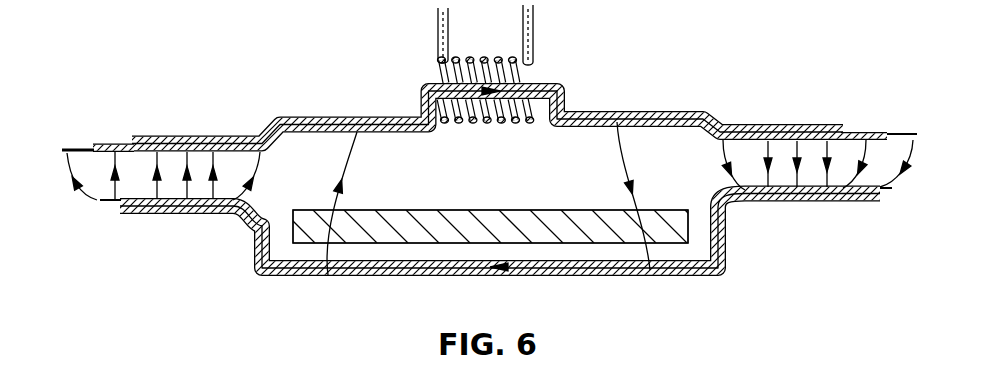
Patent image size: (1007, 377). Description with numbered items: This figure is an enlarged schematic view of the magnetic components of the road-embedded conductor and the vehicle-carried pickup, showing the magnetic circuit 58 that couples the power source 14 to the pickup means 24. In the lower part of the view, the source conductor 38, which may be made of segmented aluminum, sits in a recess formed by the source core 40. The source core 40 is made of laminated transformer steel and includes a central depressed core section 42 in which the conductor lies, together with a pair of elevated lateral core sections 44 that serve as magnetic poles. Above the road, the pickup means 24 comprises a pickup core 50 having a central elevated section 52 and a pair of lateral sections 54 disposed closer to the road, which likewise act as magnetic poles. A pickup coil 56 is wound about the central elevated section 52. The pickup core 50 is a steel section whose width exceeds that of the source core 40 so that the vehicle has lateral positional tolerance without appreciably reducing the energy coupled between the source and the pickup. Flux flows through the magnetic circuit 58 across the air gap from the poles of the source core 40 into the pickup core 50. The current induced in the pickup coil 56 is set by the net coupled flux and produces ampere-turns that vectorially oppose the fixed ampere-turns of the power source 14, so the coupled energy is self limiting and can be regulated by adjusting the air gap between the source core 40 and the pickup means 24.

The power source 14 is at (500, 198).
The pickup means 24 is at (487, 130).
The source conductor 38 is at (513, 208).
The source core 40 is at (496, 250).
The central depressed core section 42 is at (457, 277).
The elevated lateral core sections 44 is at (148, 212).
The pickup core 50 is at (385, 113).
The central elevated section 52 is at (437, 82).
The lateral sections 54 is at (238, 135).
The pickup coil 56 is at (533, 32).
The magnetic circuit 58 is at (622, 107).